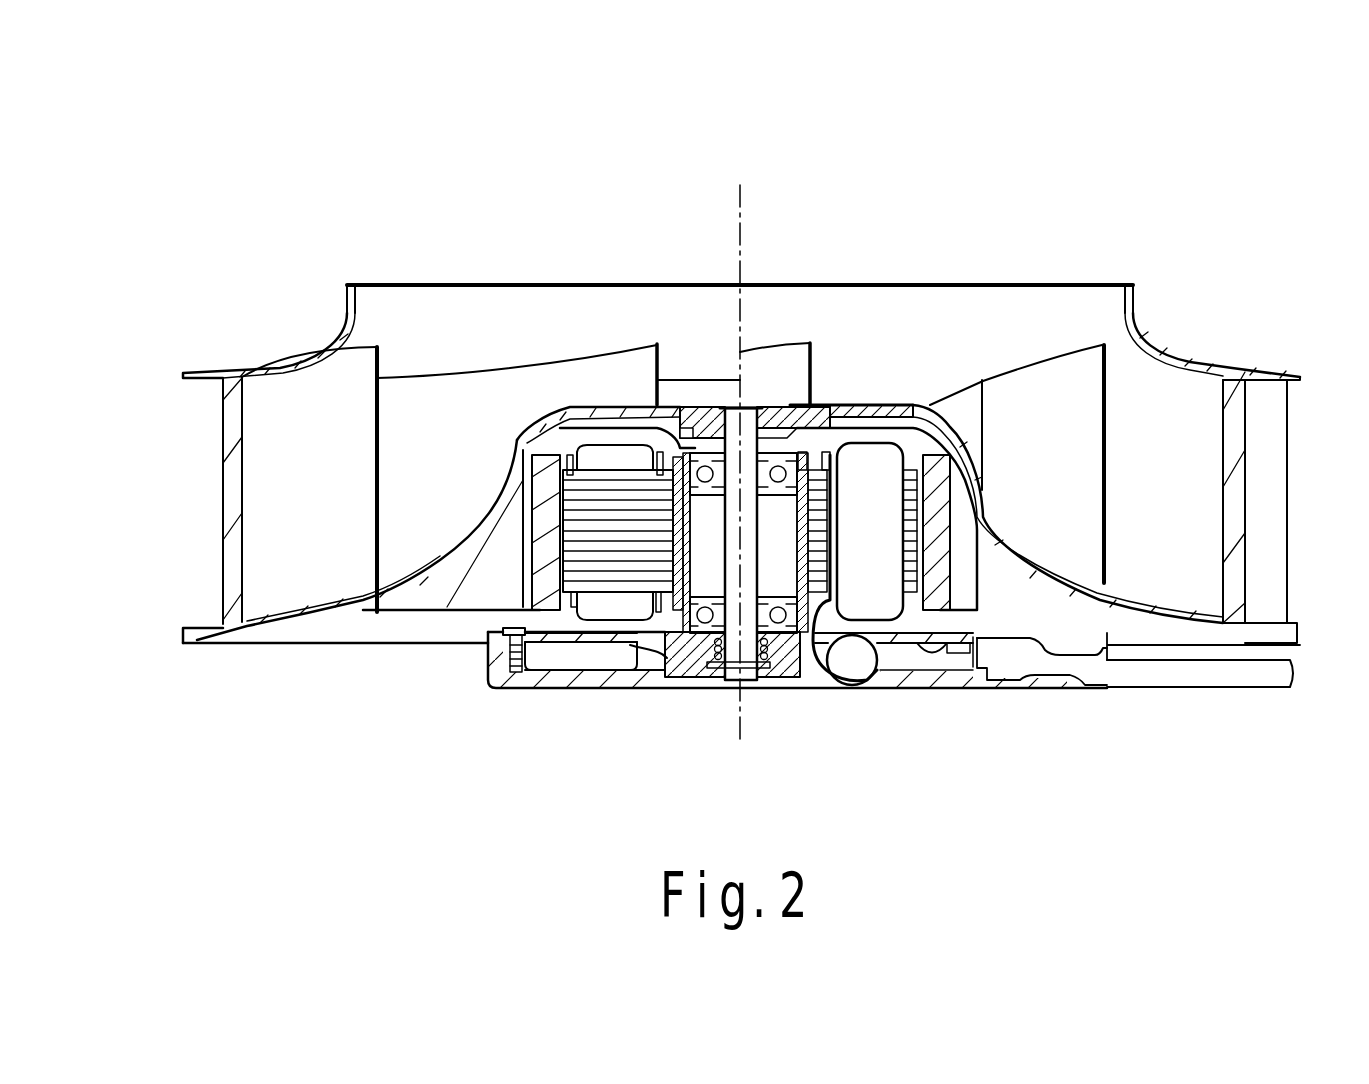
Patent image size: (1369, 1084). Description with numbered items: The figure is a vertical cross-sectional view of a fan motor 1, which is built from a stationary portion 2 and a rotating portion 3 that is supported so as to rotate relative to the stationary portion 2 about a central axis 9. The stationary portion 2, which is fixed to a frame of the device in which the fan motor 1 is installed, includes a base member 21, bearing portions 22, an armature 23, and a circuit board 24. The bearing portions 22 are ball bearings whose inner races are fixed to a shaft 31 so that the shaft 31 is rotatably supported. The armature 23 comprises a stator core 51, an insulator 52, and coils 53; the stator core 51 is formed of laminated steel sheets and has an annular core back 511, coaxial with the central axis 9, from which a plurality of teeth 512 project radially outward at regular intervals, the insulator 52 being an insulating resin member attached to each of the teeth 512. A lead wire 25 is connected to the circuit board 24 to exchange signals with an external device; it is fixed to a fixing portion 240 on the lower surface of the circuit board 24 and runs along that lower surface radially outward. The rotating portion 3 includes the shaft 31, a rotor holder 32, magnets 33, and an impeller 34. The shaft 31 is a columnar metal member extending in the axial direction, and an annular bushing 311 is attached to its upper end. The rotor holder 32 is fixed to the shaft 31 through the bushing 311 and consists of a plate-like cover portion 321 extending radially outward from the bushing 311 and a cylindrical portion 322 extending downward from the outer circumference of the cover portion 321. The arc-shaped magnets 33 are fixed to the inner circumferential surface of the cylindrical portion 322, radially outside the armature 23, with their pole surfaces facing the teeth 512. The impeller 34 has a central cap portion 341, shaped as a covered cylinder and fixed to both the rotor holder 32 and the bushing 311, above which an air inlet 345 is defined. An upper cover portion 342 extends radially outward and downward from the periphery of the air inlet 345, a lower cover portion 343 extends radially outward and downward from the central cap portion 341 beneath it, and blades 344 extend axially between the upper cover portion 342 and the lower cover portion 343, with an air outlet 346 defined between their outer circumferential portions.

The fan motor 1 is at (549, 169).
The stationary portion 2 is at (1022, 716).
The rotating portion 3 is at (688, 437).
The central axis 9 is at (738, 204).
The base member 21 is at (597, 682).
The bearing portions 22 is at (713, 635).
The armature 23 is at (585, 227).
The circuit board 24 is at (560, 644).
The lead wire 25 is at (1138, 677).
The shaft 31 is at (748, 652).
The rotor holder 32 is at (972, 233).
The magnets 33 is at (543, 550).
The impeller 34 is at (278, 212).
The stator core 51 is at (637, 453).
The insulator 52 is at (638, 523).
The coils 53 is at (595, 457).
The fixing portion 240 is at (933, 648).
The bushing 311 is at (780, 408).
The cover portion 321 is at (893, 423).
The cylindrical portion 322 is at (975, 433).
The central cap portion 341 is at (577, 410).
The upper cover portion 342 is at (263, 362).
The lower cover portion 343 is at (318, 603).
The blades 344 is at (450, 420).
The air inlet 345 is at (1038, 296).
The air outlet 346 is at (194, 512).
The core back 511 is at (848, 640).
The teeth 512 is at (907, 620).